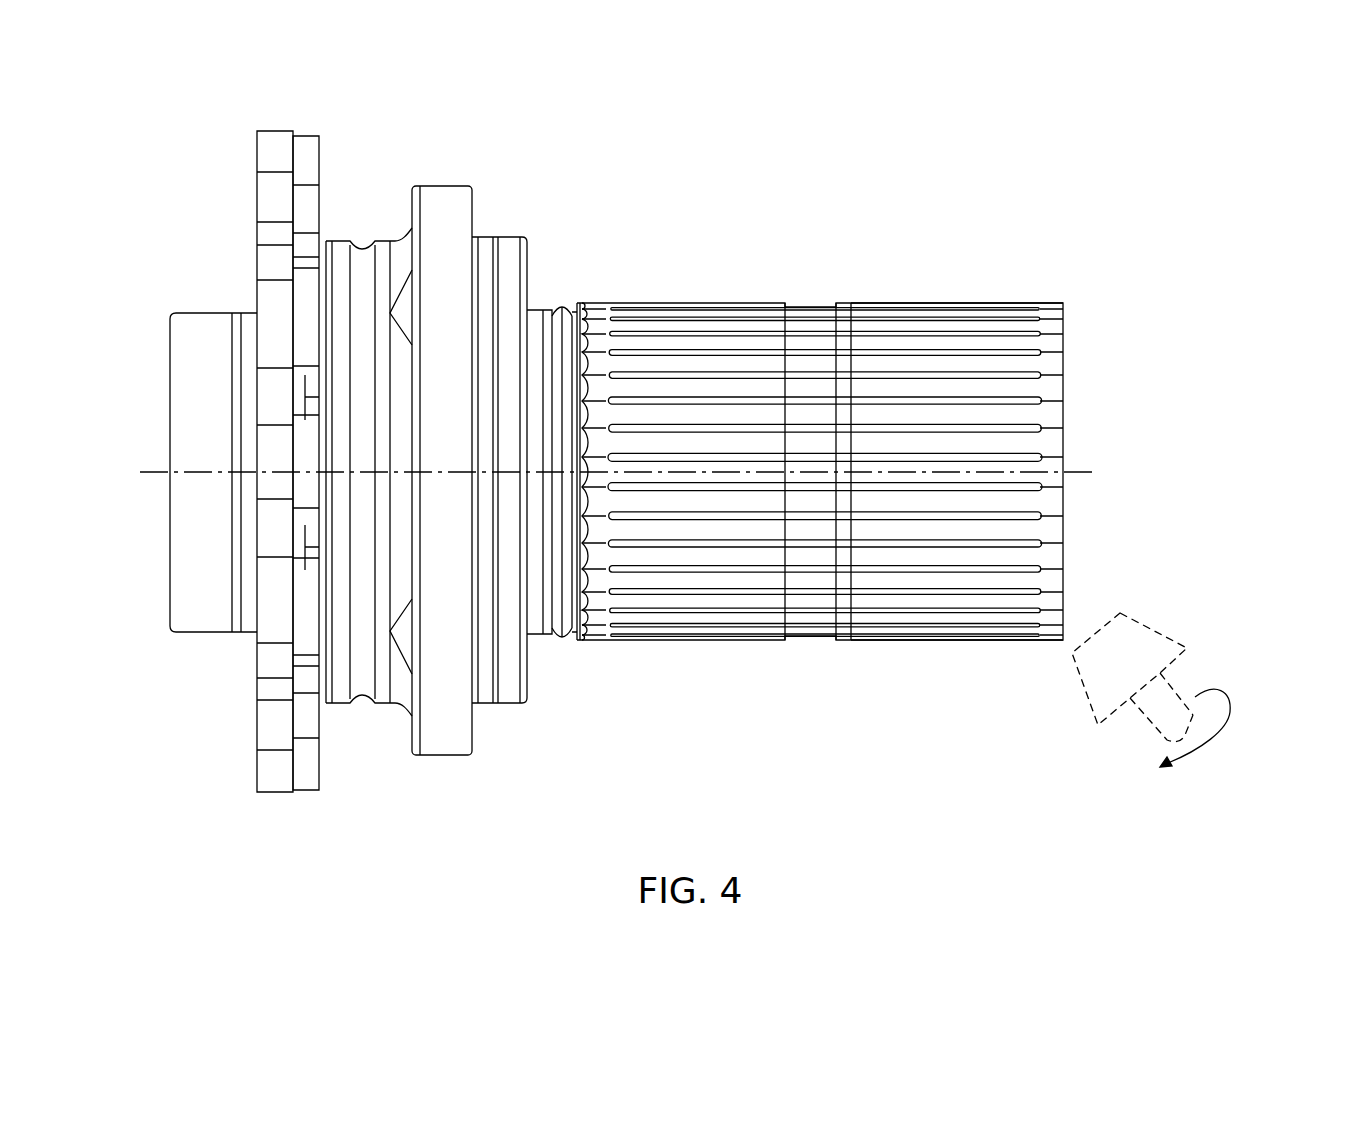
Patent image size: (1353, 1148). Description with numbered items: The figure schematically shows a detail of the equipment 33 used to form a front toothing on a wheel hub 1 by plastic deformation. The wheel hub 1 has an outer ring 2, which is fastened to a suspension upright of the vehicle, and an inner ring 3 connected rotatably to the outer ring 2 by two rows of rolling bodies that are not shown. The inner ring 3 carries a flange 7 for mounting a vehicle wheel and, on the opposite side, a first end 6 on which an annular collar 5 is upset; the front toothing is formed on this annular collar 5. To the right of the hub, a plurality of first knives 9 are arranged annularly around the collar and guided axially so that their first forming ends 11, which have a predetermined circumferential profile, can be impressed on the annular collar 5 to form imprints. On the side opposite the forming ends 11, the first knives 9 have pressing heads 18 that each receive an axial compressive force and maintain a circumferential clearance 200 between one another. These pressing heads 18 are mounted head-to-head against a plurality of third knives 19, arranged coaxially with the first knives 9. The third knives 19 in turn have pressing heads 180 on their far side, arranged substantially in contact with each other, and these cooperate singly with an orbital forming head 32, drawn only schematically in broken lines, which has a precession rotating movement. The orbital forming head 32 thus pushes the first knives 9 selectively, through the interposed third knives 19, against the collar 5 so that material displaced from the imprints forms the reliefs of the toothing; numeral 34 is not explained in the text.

The wheel hub 1 is at (390, 778).
The outer ring 2 is at (400, 255).
The inner ring 3 is at (540, 648).
The annular collar 5 is at (562, 295).
The first end 6 is at (585, 655).
The flange 7 is at (275, 578).
The first knives 9 is at (755, 388).
The first forming ends 11 is at (600, 385).
The pressing heads 18 is at (850, 395).
The third knives 19 is at (990, 345).
The orbital forming head 32 is at (1180, 632).
The equipment 33 is at (1040, 154).
The splined portion of shaft 34 is at (690, 245).
The pressing heads 180 is at (1055, 368).
The circumferential clearance 200 is at (845, 420).